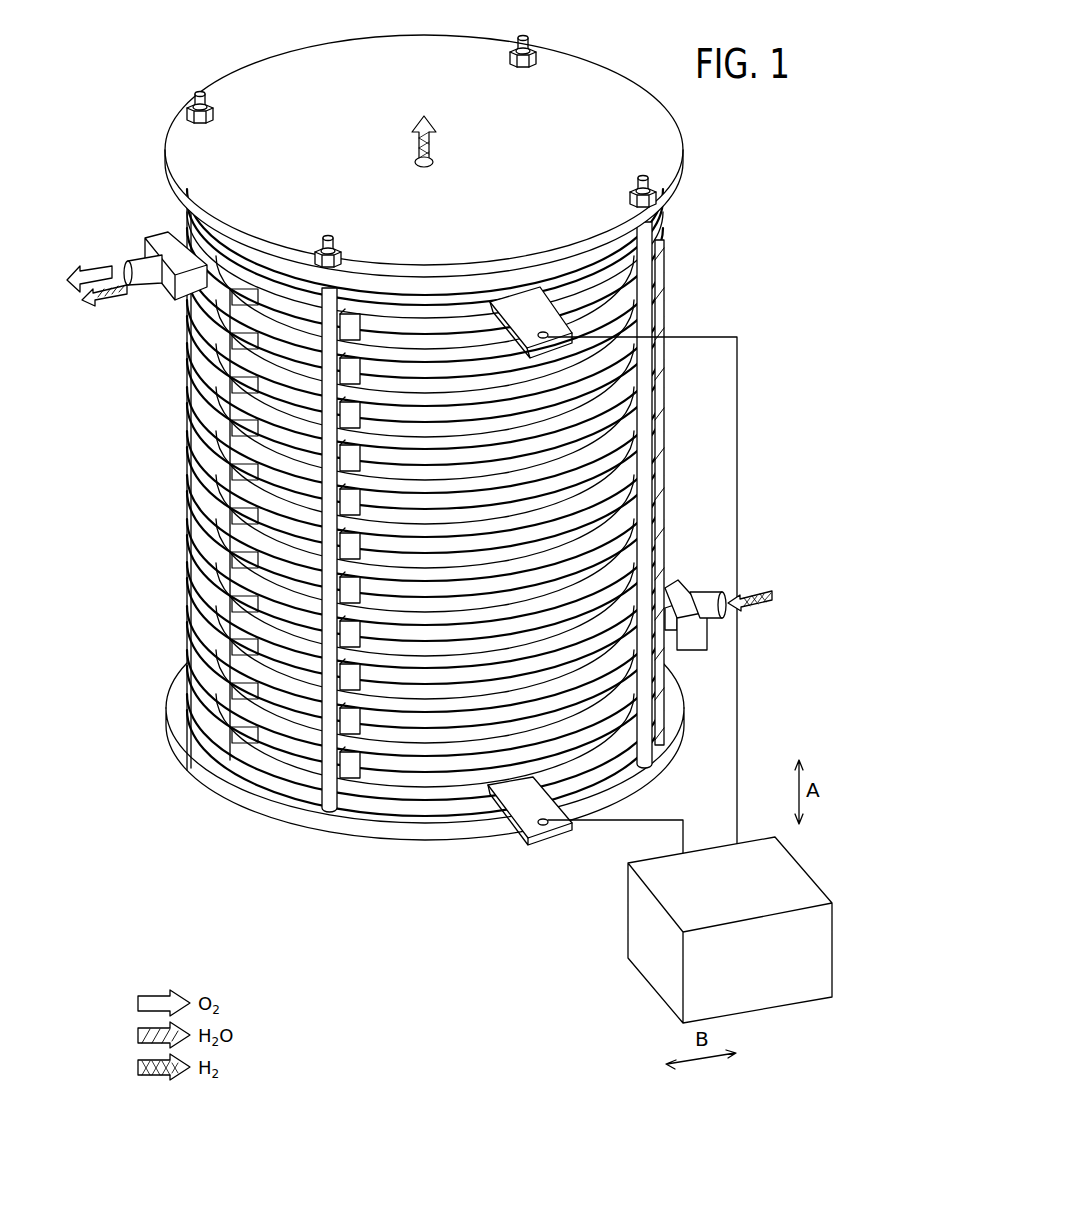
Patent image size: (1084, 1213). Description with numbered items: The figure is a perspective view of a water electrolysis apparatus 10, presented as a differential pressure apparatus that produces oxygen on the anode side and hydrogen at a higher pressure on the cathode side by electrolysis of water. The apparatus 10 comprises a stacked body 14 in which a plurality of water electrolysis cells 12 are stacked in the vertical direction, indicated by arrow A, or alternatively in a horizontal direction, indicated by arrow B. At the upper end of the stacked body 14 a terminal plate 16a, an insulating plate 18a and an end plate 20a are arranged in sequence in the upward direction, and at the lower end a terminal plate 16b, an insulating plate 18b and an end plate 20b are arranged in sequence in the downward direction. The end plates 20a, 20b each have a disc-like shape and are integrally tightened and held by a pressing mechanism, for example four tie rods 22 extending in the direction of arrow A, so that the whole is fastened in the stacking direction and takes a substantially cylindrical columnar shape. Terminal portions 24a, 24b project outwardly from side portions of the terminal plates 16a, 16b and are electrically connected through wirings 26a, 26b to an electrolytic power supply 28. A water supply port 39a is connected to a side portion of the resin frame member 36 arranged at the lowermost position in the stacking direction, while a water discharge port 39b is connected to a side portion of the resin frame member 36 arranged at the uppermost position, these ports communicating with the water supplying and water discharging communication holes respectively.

The water electrolysis apparatus 10 is at (771, 126).
The water electrolysis cell 12 is at (194, 437).
The stacked body 14 is at (379, 561).
The terminal plate 16a is at (432, 313).
The terminal plate 16b is at (456, 806).
The insulating plate 18a is at (467, 297).
The insulating plate 18b is at (404, 818).
The end plate 20a is at (604, 75).
The end plate 20b is at (367, 850).
The tie rod 22 is at (327, 814).
The terminal portion 24a is at (516, 305).
The terminal portion 24b is at (540, 840).
The wiring 26a is at (707, 334).
The wiring 26b is at (599, 823).
The electrolytic power supply 28 is at (655, 972).
The resin frame member 36 is at (216, 297).
The water supply port 39a is at (707, 590).
The water discharge port 39b is at (139, 258).